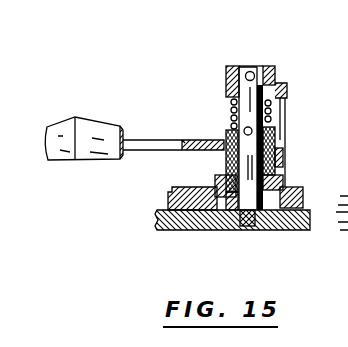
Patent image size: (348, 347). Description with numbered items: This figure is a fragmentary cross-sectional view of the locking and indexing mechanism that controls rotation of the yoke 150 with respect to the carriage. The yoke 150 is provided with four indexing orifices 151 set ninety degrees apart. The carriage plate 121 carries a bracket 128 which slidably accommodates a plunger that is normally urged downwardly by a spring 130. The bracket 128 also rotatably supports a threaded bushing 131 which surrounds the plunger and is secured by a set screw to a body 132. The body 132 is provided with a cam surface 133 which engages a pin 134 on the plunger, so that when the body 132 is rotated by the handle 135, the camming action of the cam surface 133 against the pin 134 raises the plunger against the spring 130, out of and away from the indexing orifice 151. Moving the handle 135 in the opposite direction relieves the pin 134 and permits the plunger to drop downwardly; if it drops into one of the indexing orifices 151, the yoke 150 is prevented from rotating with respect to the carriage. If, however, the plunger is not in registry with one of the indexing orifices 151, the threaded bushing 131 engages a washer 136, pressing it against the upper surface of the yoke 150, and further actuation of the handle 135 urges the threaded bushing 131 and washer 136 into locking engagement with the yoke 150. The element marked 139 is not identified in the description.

The carriage plate 121 is at (287, 187).
The bracket 128 is at (273, 75).
The spring 130 is at (228, 112).
The threaded bushing 131 is at (286, 130).
The body 132 is at (228, 129).
The cam surface 133 is at (222, 158).
The pin 134 is at (272, 116).
The handle 135 is at (140, 151).
The washer 136 is at (298, 197).
The pin 139 is at (250, 71).
The yoke 150 is at (197, 230).
The indexing orifice 151 is at (250, 227).